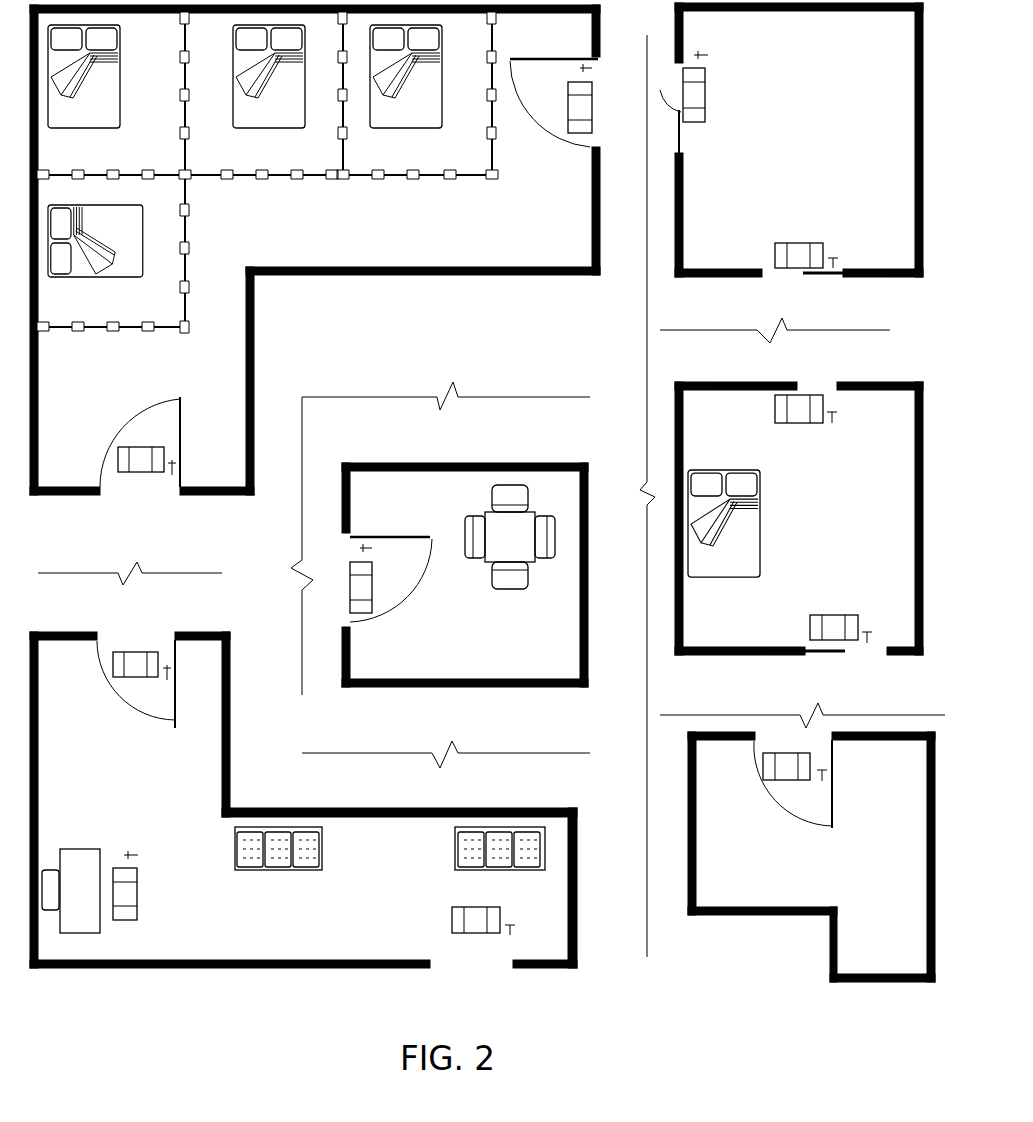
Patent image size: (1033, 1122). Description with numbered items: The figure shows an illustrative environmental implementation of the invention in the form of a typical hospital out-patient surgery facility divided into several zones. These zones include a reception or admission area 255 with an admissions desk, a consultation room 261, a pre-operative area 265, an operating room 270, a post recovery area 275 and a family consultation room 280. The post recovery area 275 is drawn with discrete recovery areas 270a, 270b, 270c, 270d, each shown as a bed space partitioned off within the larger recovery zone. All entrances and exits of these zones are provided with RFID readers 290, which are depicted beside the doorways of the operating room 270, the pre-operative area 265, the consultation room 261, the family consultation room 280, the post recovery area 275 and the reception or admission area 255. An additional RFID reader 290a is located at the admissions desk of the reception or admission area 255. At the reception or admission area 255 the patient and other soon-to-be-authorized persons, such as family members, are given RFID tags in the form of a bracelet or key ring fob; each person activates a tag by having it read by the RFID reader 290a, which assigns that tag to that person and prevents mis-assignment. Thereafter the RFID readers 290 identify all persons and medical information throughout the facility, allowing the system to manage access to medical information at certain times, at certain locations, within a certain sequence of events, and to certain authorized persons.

The reception or admission area 255 is at (351, 937).
The consultation room 261 is at (899, 817).
The pre-operative area 265 is at (886, 502).
The operating room 270 is at (886, 83).
The post-op recovery bed 270a is at (458, 152).
The post-op recovery bed 270b is at (310, 157).
The post-op recovery bed 270c is at (172, 147).
The post-op recovery bed 270d is at (165, 304).
The post recovery area 275 is at (548, 245).
The family consultation room 280 is at (431, 523).
The RFID readers 290 is at (597, 108).
The RFID reader 290a is at (136, 895).